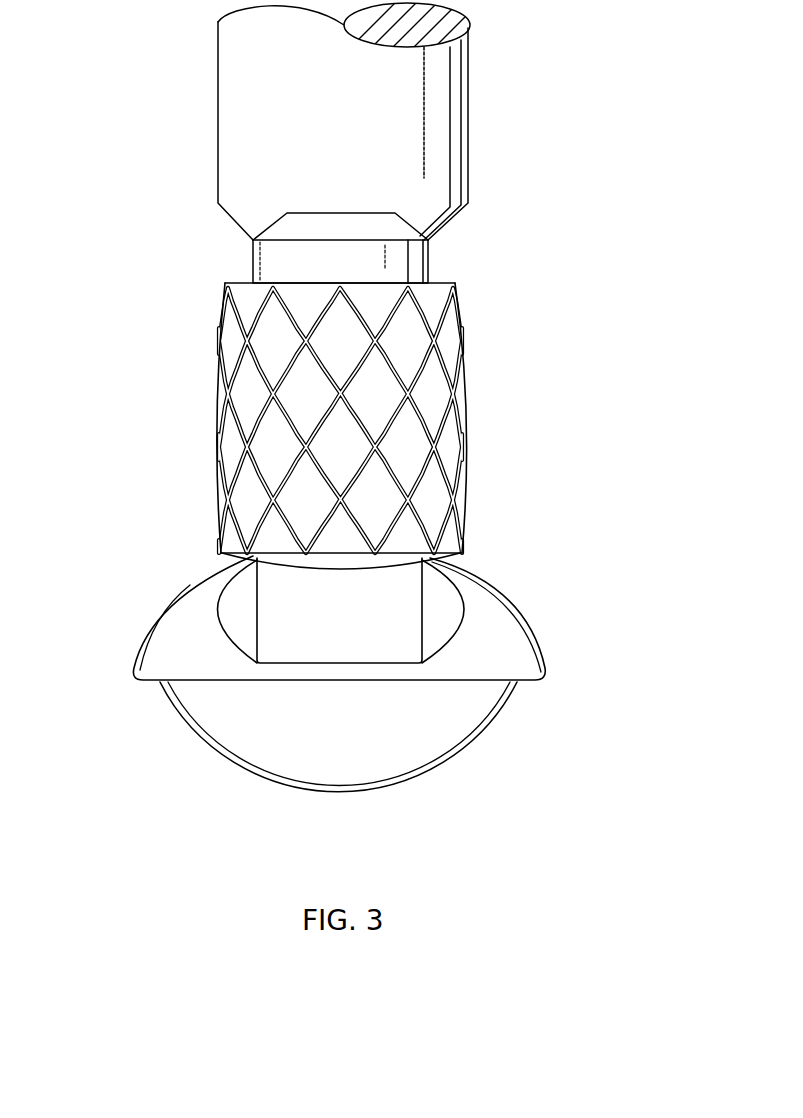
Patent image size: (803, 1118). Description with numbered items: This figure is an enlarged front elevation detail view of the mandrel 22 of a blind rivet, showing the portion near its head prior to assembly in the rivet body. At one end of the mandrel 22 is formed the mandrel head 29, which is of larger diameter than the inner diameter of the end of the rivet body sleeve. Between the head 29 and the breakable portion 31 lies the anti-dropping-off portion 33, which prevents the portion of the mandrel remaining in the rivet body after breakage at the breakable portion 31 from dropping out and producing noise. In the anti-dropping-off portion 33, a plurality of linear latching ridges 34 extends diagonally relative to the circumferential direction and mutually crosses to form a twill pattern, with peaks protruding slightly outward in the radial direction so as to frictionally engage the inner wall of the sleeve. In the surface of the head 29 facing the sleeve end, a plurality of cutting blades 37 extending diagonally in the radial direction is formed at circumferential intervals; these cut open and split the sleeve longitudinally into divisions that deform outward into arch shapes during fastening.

The mandrel 22 is at (549, 282).
The mandrel head 29 is at (528, 663).
The breakable portion 31 is at (392, 265).
The anti-dropping-off portion 33 is at (200, 553).
The latching ridges 34 is at (285, 355).
The cutting blades 37 is at (187, 583).